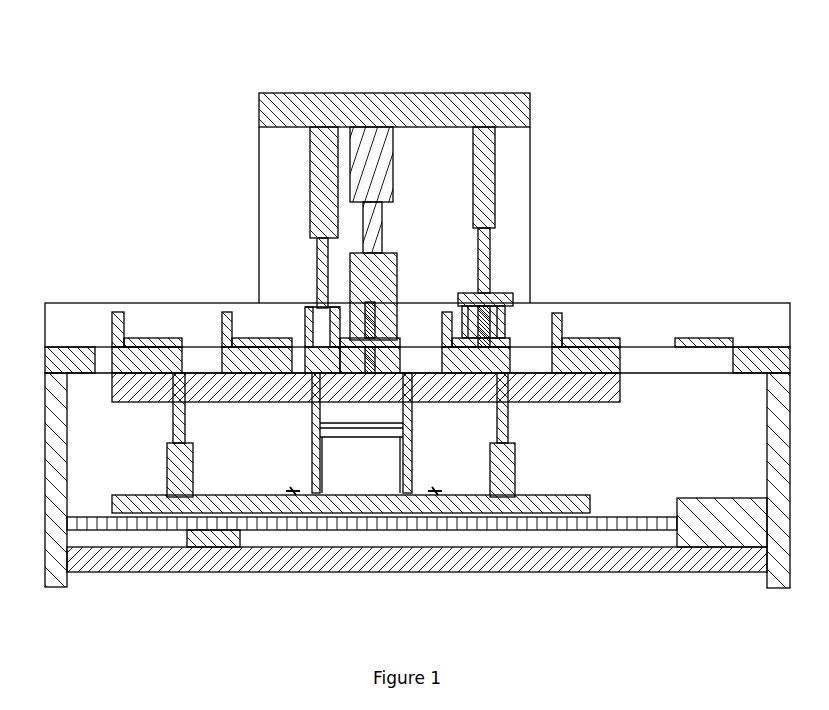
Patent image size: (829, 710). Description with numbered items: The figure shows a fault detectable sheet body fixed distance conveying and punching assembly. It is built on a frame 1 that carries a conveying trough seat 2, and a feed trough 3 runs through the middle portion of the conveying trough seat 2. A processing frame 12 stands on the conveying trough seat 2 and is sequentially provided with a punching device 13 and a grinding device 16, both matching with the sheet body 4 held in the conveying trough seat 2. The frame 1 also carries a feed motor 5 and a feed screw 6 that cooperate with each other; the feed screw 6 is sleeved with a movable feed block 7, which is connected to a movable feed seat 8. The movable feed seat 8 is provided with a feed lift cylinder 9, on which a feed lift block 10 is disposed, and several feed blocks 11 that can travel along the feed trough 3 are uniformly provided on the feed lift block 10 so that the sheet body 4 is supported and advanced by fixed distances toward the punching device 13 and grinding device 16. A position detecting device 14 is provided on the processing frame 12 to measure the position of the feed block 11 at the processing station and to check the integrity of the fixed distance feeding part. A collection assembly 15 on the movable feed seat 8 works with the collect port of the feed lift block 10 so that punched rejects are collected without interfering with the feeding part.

The frame 1 is at (605, 552).
The conveying trough seat 2 is at (62, 345).
The feed trough 3 is at (637, 350).
The sheet body 4 is at (718, 340).
The feed motor 5 is at (710, 522).
The feed screw 6 is at (530, 523).
The movable feed block 7 is at (228, 533).
The movable feed seat 8 is at (437, 495).
The feed lift cylinder 9 is at (172, 475).
The feed lift block 10 is at (152, 345).
The feed block 11 is at (222, 345).
The processing frame 12 is at (362, 112).
The punching device 13 is at (383, 287).
The position detecting device 14 is at (307, 307).
The collection assembly 15 is at (350, 477).
The grinding device 16 is at (507, 292).